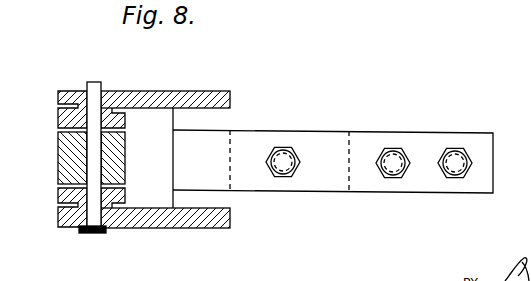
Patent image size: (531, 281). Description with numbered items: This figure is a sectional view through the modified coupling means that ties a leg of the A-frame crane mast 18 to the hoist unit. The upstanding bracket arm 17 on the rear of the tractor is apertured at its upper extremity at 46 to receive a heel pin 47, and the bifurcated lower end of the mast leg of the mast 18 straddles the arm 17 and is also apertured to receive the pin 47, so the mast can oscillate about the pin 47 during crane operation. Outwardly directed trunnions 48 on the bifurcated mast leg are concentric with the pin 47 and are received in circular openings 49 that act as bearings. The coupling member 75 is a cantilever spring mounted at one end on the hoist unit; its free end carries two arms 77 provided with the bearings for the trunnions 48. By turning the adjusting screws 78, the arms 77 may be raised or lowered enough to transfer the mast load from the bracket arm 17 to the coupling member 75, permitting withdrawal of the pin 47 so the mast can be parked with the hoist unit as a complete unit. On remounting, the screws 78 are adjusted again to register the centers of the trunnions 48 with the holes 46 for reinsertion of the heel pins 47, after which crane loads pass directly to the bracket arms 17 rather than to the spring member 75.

The upstanding arm 17 is at (58, 150).
The A-frame crane mast 18 is at (58, 120).
The aperture 46 is at (86, 163).
The heel pin 47 is at (87, 82).
The trunnion 48 is at (102, 91).
The circular opening 49 is at (78, 229).
The coupling member 75 is at (315, 131).
The arm 77 is at (153, 91).
The adjusting screw 78 is at (292, 179).